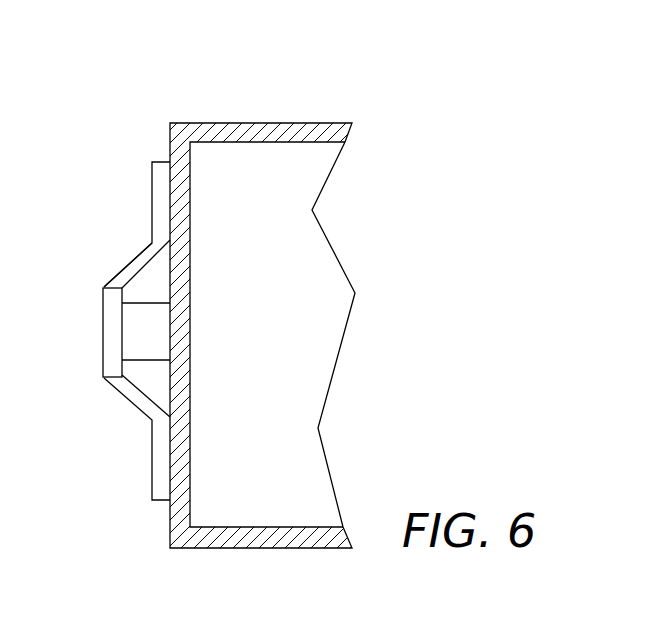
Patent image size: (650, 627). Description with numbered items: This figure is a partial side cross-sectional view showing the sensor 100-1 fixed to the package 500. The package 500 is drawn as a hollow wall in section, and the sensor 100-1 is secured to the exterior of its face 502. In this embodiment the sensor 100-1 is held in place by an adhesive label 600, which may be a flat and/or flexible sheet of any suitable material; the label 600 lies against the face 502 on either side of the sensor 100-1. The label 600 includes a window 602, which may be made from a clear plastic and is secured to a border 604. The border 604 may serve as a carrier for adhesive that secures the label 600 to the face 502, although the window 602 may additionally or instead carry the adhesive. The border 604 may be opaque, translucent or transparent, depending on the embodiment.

The package 500 is at (285, 122).
The face 502 is at (170, 152).
The adhesive label 600 is at (152, 203).
The border 604 is at (125, 266).
The window 602 is at (102, 350).
The sensor 100-1 is at (156, 318).